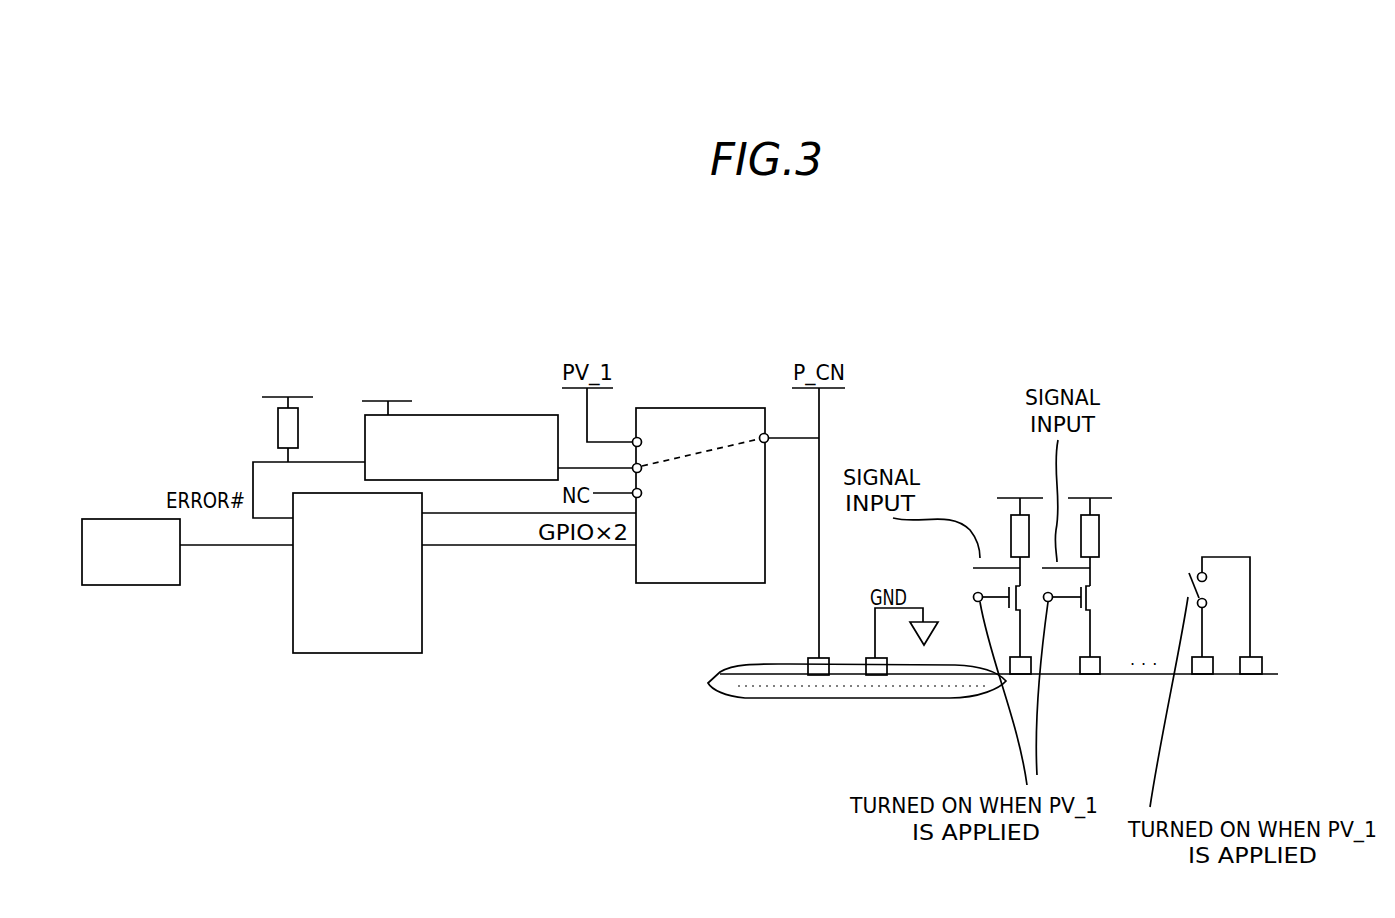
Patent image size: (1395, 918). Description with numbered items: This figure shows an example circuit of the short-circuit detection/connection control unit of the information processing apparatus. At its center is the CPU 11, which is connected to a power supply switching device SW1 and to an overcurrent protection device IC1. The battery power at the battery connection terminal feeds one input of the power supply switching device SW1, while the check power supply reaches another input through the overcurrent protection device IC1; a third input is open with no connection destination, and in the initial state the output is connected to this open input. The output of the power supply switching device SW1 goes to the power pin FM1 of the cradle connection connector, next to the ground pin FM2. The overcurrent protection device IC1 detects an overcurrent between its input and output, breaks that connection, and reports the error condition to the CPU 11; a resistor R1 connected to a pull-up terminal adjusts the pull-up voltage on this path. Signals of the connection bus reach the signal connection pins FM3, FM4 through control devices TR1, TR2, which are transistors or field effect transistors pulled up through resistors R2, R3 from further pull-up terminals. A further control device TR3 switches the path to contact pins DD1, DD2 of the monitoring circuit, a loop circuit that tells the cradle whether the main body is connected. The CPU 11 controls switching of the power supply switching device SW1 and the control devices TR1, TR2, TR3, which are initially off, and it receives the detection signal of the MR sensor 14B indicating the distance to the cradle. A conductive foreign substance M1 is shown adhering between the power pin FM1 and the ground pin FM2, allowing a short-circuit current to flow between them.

The MR sensor 14B is at (125, 518).
The CPU 11 is at (422, 602).
The resistor R1 is at (278, 425).
The overcurrent protection device IC1 is at (430, 415).
The power supply switching device SW1 is at (712, 408).
The conductive foreign substance M1 is at (742, 690).
The power pin FM1 is at (818, 676).
The GND pin FM2 is at (876, 676).
The signal connection pin FM3 is at (1005, 690).
The signal connection pin FM4 is at (1090, 676).
The resistor R2 is at (1011, 524).
The resistor R3 is at (1099, 530).
The control device TR1 is at (1010, 590).
The control device TR2 is at (1090, 611).
The control device TR3 is at (1196, 581).
The contact pin DD1 is at (1197, 676).
The contact pin DD2 is at (1247, 676).